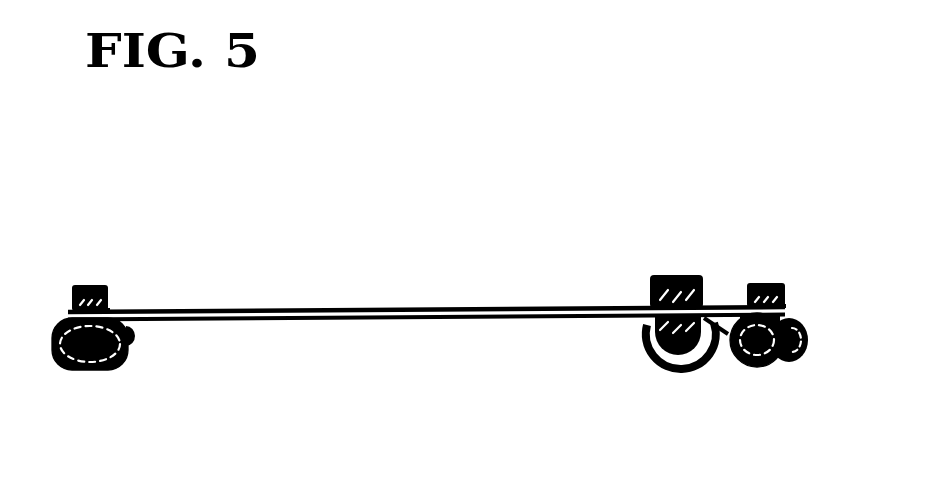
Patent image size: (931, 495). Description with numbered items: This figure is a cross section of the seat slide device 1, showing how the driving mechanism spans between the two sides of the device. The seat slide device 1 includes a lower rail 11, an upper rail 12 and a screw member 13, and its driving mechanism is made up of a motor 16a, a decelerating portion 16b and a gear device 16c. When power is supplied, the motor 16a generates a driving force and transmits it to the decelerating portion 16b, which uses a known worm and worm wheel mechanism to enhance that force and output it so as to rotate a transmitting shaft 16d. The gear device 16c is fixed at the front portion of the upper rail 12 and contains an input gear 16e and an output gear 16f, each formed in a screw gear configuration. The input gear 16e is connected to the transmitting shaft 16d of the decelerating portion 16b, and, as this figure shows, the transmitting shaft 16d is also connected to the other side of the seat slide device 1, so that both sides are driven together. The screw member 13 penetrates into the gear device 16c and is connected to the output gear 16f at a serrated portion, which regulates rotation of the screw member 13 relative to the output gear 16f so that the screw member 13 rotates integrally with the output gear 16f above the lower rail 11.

The seat slide device 1 is at (78, 268).
The lower rail 11 is at (124, 362).
The upper rail 12 is at (133, 350).
The screw member 13 is at (90, 373).
The motor 16a is at (652, 354).
The decelerating portion 16b is at (672, 277).
The gear device 16c is at (93, 286).
The transmitting shaft 16d is at (530, 304).
The input gear 16e is at (122, 307).
The output gear 16f is at (131, 333).